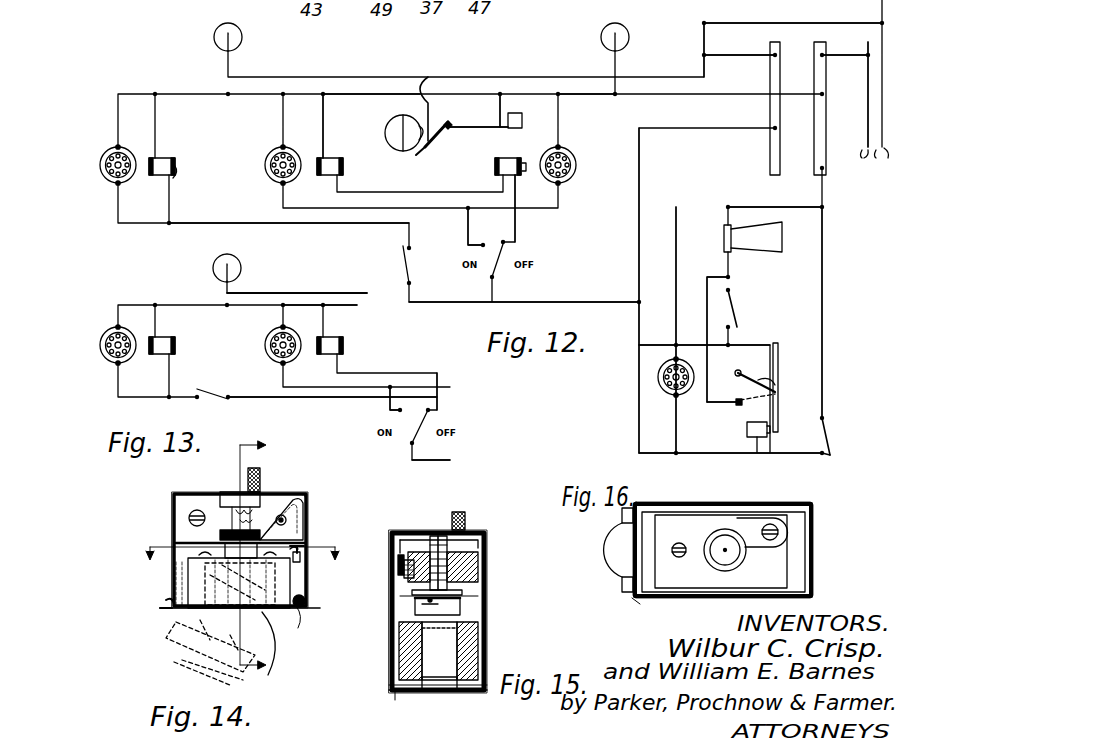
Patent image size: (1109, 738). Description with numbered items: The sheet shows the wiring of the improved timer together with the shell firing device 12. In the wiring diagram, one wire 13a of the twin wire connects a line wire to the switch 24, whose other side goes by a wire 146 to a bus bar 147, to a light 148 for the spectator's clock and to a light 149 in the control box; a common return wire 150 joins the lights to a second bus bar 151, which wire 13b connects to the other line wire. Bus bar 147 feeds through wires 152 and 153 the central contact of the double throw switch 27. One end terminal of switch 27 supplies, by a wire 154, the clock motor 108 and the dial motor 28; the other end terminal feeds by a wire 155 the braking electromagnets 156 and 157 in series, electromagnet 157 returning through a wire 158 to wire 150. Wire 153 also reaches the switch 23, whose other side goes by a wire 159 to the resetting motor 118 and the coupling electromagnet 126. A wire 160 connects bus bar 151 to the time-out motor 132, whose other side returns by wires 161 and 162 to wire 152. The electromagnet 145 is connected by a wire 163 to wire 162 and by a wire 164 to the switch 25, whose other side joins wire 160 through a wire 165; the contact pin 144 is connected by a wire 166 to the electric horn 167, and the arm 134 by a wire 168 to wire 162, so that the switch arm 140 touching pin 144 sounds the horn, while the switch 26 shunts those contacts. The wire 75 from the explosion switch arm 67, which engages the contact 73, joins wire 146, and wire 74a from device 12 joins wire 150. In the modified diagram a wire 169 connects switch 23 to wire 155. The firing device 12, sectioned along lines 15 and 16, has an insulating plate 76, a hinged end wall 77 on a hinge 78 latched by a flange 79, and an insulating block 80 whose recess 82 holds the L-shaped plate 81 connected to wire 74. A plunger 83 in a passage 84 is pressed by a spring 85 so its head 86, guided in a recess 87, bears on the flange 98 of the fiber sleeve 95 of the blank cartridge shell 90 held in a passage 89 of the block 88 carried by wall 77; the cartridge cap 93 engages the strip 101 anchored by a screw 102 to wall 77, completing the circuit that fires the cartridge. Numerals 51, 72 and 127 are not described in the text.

In FIG. 12, the shell firing device 12 is at (522, 121).
In FIG. 14, the shell firing device 12 is at (172, 497).
In FIG. 16, the shell firing device 12 is at (650, 598).
In FIG. 12, the wire 13a is at (810, 22).
In FIG. 12, the wire 13b is at (840, 70).
In FIG. 14, the section line 15 is at (251, 553).
In FIG. 15, the section line 15 is at (460, 512).
In FIG. 14, the section line 16 is at (244, 570).
In FIG. 12, the switch 23 is at (402, 264).
In FIG. 13, the switch 23 is at (220, 396).
In FIG. 12, the switch 24 is at (700, 52).
In FIG. 12, the switch 25 is at (828, 440).
In FIG. 12, the switch 26 is at (740, 312).
In FIG. 12, the double throw switch 27 is at (496, 280).
In FIG. 13, the double throw switch 27 is at (430, 414).
In FIG. 12, the motor 28 is at (566, 162).
In FIG. 12, the bellows 51 is at (398, 146).
In FIG. 12, the switch arm 67 is at (437, 151).
In FIG. 12, the switch blade 72 is at (443, 115).
In FIG. 12, the contact 73 is at (455, 122).
In FIG. 12, the wire 74 is at (468, 136).
In FIG. 15, the wire 74 is at (420, 545).
In FIG. 12, the wire 74a is at (500, 94).
In FIG. 14, the wire 74a is at (303, 556).
In FIG. 15, the wire 74a is at (398, 562).
In FIG. 12, the wire 75 is at (428, 77).
In FIG. 14, the plate 76 is at (308, 500).
In FIG. 15, the plate 76 is at (470, 533).
In FIG. 14, the end wall 77 is at (300, 620).
In FIG. 15, the end wall 77 is at (410, 694).
In FIG. 16, the end wall 77 is at (648, 590).
In FIG. 14, the hinge 78 is at (304, 606).
In FIG. 14, the flange 79 is at (165, 603).
In FIG. 16, the flange 79 is at (623, 537).
In FIG. 14, the block 80 is at (188, 520).
In FIG. 15, the block 80 is at (478, 580).
In FIG. 14, the L-shaped metallic plate 81 is at (262, 490).
In FIG. 15, the L-shaped metallic plate 81 is at (479, 556).
In FIG. 14, the recess 82 is at (230, 492).
In FIG. 15, the recess 82 is at (463, 542).
In FIG. 15, the plunger 83 is at (440, 533).
In FIG. 15, the passage 84 is at (412, 593).
In FIG. 15, the spring 85 is at (416, 604).
In FIG. 14, the head 86 is at (280, 500).
In FIG. 15, the head 86 is at (460, 610).
In FIG. 14, the recess 87 is at (227, 534).
In FIG. 15, the recess 87 is at (470, 594).
In FIG. 14, the block 88 is at (176, 610).
In FIG. 15, the block 88 is at (405, 688).
In FIG. 16, the block 88 is at (768, 576).
In FIG. 15, the passage 89 is at (447, 690).
In FIG. 14, the blank cartridge shell 90 is at (200, 652).
In FIG. 15, the blank cartridge shell 90 is at (440, 666).
In FIG. 15, the cup-shaped metallic cap 93 is at (405, 645).
In FIG. 14, the fiber sleeve 95 is at (286, 518).
In FIG. 15, the fiber sleeve 95 is at (424, 606).
In FIG. 16, the fiber sleeve 95 is at (712, 540).
In FIG. 16, the peripheral flange 98 is at (706, 562).
In FIG. 14, the metallic strip 101 is at (288, 643).
In FIG. 16, the metallic strip 101 is at (760, 518).
In FIG. 14, the screw 102 is at (300, 546).
In FIG. 16, the screw 102 is at (780, 533).
In FIG. 12, the motor 108 is at (265, 165).
In FIG. 13, the motor 108 is at (265, 350).
In FIG. 12, the resetting motor 118 is at (125, 182).
In FIG. 13, the resetting motor 118 is at (125, 362).
In FIG. 12, the electromagnet 126 is at (167, 160).
In FIG. 13, the electromagnet 126 is at (167, 340).
In FIG. 12, the conductor 127 is at (180, 180).
In FIG. 12, the time-out motor 132 is at (658, 378).
In FIG. 12, the arm 134 is at (778, 367).
In FIG. 12, the time-out switch arm 140 is at (775, 392).
In FIG. 12, the contact pin 144 is at (738, 405).
In FIG. 12, the electromagnet 145 is at (746, 432).
In FIG. 12, the wire 146 is at (566, 94).
In FIG. 13, the wire 146 is at (262, 293).
In FIG. 12, the bus bar 147 is at (770, 108).
In FIG. 12, the light 148 is at (214, 38).
In FIG. 13, the light 148 is at (214, 270).
In FIG. 12, the light 149 is at (629, 36).
In FIG. 12, the common return wire 150 is at (335, 94).
In FIG. 13, the common return wire 150 is at (276, 310).
In FIG. 12, the bus bar 151 is at (826, 128).
In FIG. 12, the wire 152 is at (641, 150).
In FIG. 12, the wire 153 is at (603, 292).
In FIG. 13, the wire 153 is at (437, 460).
In FIG. 12, the wire 154 is at (467, 235).
In FIG. 13, the wire 154 is at (407, 385).
In FIG. 12, the wire 155 is at (410, 150).
In FIG. 13, the wire 155 is at (437, 376).
In FIG. 12, the electromagnet 156 is at (495, 166).
In FIG. 12, the electromagnet 157 is at (355, 150).
In FIG. 13, the electromagnet 157 is at (344, 350).
In FIG. 12, the wire 158 is at (347, 126).
In FIG. 12, the wire 159 is at (252, 225).
In FIG. 12, the wire 160 is at (744, 206).
In FIG. 12, the wire 161 is at (676, 422).
In FIG. 12, the wire 162 is at (639, 447).
In FIG. 12, the wire 163 is at (654, 344).
In FIG. 12, the wire 164 is at (815, 456).
In FIG. 12, the wire 165 is at (824, 258).
In FIG. 12, the wire 166 is at (703, 290).
In FIG. 12, the electric horn 167 is at (775, 235).
In FIG. 12, the wire 168 is at (752, 345).
In FIG. 13, the wire 169 is at (324, 400).